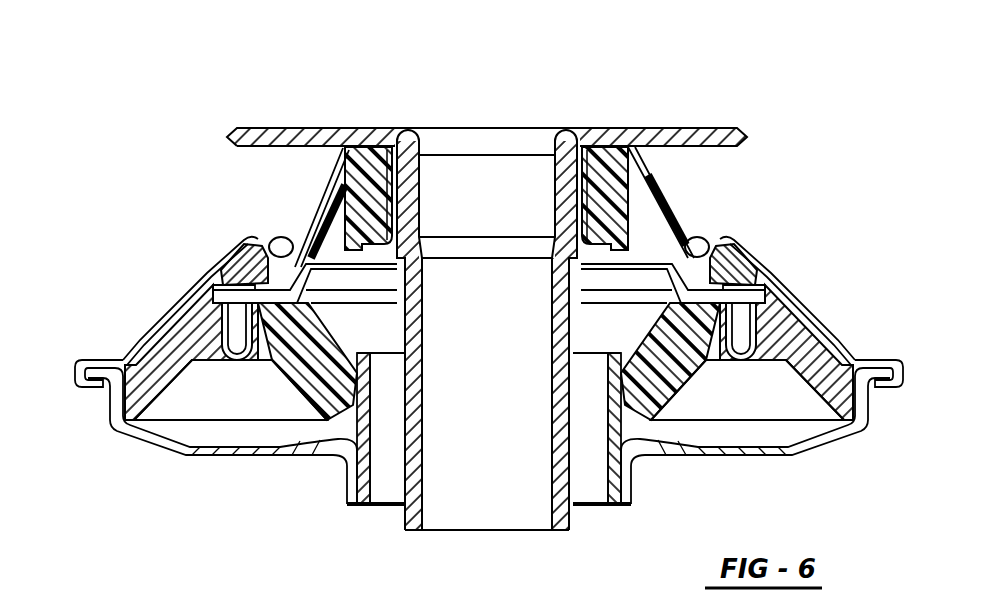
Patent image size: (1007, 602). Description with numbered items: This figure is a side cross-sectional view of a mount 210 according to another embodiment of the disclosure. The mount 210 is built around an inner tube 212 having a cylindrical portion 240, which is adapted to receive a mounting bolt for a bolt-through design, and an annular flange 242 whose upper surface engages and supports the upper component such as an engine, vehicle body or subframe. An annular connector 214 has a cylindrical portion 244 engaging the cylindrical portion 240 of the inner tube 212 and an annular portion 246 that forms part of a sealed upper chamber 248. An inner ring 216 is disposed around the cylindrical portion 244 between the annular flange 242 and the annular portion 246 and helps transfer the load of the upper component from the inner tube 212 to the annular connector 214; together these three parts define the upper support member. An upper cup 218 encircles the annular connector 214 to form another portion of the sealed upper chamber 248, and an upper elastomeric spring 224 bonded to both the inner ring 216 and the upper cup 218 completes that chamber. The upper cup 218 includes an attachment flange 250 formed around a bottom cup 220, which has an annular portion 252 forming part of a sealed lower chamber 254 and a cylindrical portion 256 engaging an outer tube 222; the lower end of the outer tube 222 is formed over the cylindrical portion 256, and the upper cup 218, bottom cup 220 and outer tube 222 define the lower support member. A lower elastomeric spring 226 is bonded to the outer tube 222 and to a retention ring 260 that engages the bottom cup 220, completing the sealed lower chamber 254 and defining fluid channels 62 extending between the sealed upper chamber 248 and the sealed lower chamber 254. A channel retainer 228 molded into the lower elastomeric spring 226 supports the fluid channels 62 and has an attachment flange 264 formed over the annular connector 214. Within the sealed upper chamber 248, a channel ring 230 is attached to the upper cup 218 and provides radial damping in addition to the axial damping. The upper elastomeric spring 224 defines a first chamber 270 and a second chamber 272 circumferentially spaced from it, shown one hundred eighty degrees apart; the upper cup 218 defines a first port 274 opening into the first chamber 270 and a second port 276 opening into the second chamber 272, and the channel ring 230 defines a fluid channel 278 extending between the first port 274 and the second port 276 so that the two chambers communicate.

The mount 210 is at (762, 85).
The annular flange 242 is at (303, 138).
The upper elastomeric spring 224 is at (330, 187).
The inner ring 216 is at (608, 165).
The cylindrical portion 244 is at (412, 205).
The cylindrical portion 240 is at (437, 337).
The inner tube 212 is at (418, 531).
The annular connector 214 is at (693, 243).
The second chamber 272 is at (710, 250).
The second port 276 is at (735, 262).
The channel ring 230 is at (768, 285).
The attachment flange 264 is at (765, 300).
The fluid channel 62 is at (772, 323).
The channel retainer 228 is at (740, 320).
The upper cup 218 is at (848, 352).
The retention ring 260 is at (860, 407).
The bottom cup 220 is at (812, 455).
The outer tube 222 is at (618, 498).
The cylindrical portion 256 is at (348, 472).
The annular portion 252 is at (240, 456).
The sealed lower chamber 254 is at (223, 385).
The attachment flange 250 is at (80, 360).
The lower elastomeric spring 226 is at (151, 330).
The sealed upper chamber 248 is at (158, 347).
The annular portion 246 is at (221, 290).
The fluid channel 278 is at (237, 258).
The first port 274 is at (268, 250).
The first chamber 270 is at (280, 238).